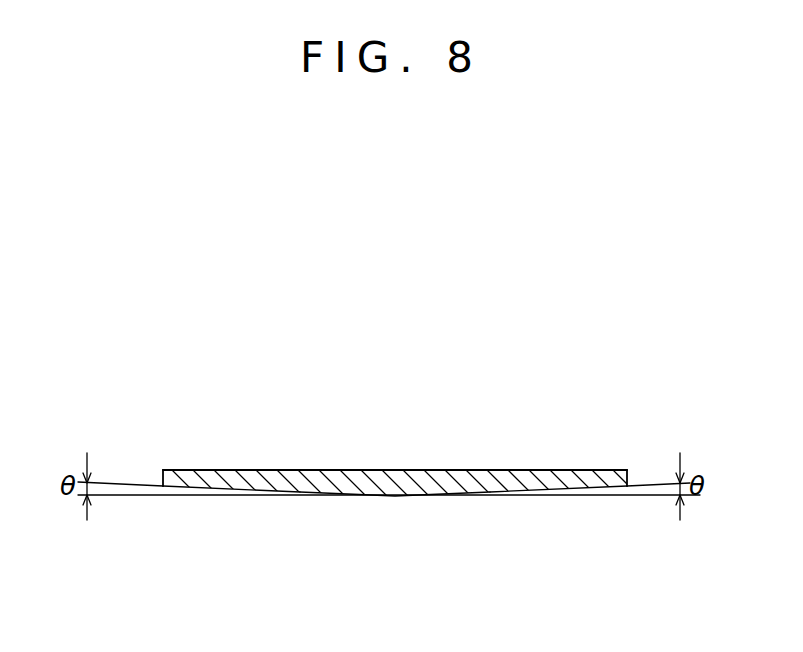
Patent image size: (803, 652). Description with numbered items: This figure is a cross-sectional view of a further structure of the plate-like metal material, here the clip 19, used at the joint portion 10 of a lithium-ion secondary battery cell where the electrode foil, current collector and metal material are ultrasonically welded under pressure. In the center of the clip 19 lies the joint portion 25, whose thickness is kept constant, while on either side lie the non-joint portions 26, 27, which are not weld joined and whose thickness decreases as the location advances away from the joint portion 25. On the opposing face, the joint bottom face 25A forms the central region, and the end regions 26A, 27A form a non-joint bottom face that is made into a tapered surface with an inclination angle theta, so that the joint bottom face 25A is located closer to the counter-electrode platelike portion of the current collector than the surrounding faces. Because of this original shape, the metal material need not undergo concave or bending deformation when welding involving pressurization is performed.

The joint portion 10 is at (393, 478).
The clip 19 is at (450, 473).
The joint portion 25 is at (368, 485).
The non-joint portion 26 is at (230, 483).
The non-joint portion 27 is at (556, 478).
The joint bottom face 25A is at (405, 497).
The end region 26A is at (215, 495).
The end region 27A is at (588, 494).